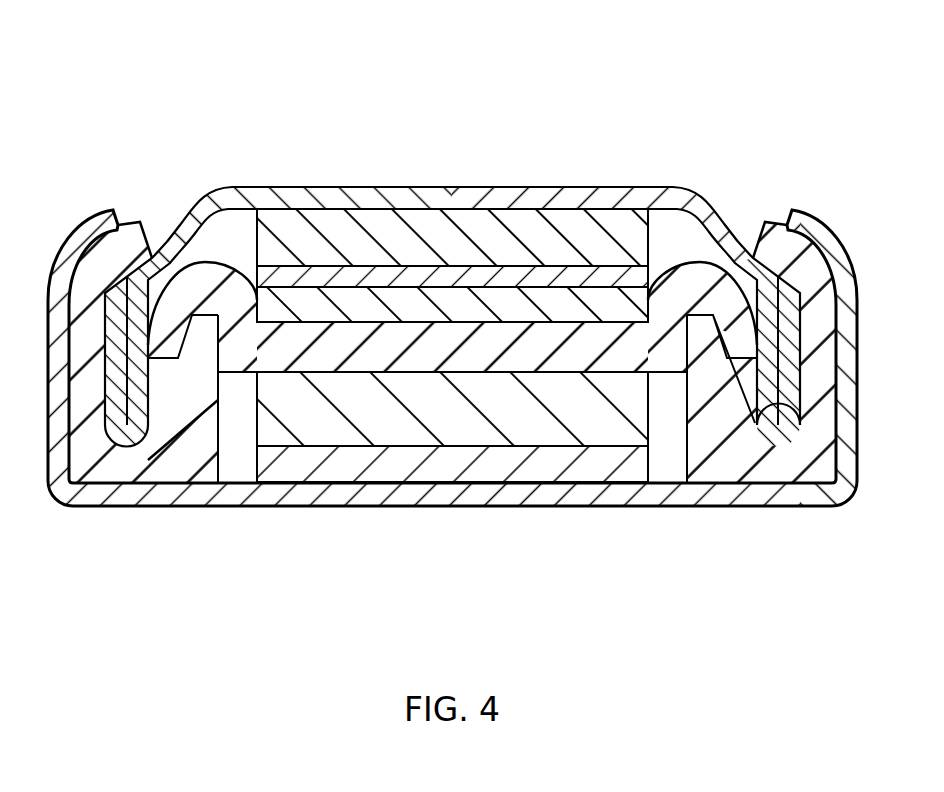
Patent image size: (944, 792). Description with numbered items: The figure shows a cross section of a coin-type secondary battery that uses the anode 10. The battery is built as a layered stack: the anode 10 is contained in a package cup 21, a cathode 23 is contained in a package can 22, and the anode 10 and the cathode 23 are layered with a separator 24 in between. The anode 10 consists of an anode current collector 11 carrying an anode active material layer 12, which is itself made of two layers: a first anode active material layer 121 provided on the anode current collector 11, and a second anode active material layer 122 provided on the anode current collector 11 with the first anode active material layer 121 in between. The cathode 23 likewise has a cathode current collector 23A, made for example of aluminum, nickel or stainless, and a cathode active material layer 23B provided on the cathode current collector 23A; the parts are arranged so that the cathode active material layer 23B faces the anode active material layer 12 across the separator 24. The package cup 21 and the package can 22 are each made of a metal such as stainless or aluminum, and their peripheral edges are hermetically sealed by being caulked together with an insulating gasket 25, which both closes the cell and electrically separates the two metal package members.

The anode 10 is at (360, 61).
The anode current collector 11 is at (366, 222).
The anode active material layer 12 is at (617, 117).
The first anode active material layer 121 is at (524, 280).
The second anode active material layer 122 is at (595, 303).
The package cup 21 is at (260, 187).
The package can 22 is at (320, 490).
The cathode 23 is at (612, 582).
The cathode current collector 23A is at (453, 467).
The cathode active material layer 23B is at (590, 420).
The separator 24 is at (712, 290).
The insulating gasket 25 is at (178, 468).